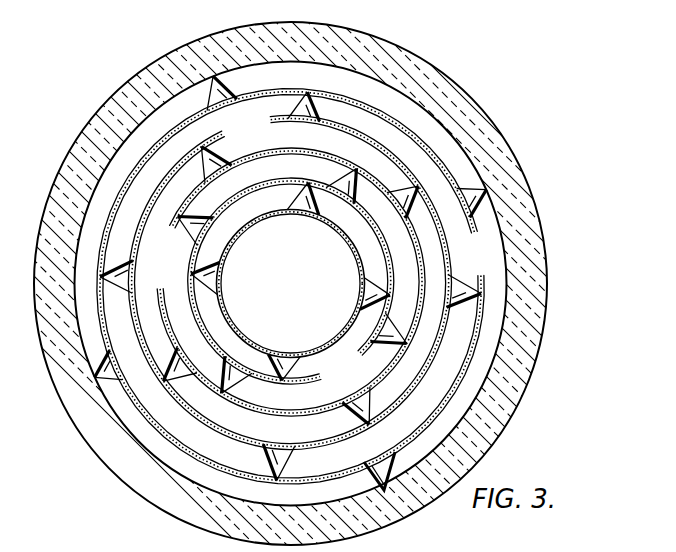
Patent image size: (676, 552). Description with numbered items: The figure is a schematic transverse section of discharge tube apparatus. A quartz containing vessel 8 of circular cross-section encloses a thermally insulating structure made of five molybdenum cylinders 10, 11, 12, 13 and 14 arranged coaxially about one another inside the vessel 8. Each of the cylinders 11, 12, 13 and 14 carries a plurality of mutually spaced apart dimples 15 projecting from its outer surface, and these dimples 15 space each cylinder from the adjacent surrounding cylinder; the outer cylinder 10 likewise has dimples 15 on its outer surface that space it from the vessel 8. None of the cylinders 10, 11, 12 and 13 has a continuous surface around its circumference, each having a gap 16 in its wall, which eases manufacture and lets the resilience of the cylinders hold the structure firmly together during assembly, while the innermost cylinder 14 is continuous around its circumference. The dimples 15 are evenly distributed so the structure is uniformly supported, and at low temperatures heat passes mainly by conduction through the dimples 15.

The quartz containing vessel 8 is at (493, 413).
The outer cylinder 10 is at (448, 165).
The cylinder 11 is at (377, 140).
The cylinder 12 is at (283, 147).
The cylinder 13 is at (380, 240).
The innermost cylinder 14 is at (357, 267).
The dimples 15 is at (362, 471).
The gap 16 is at (482, 258).